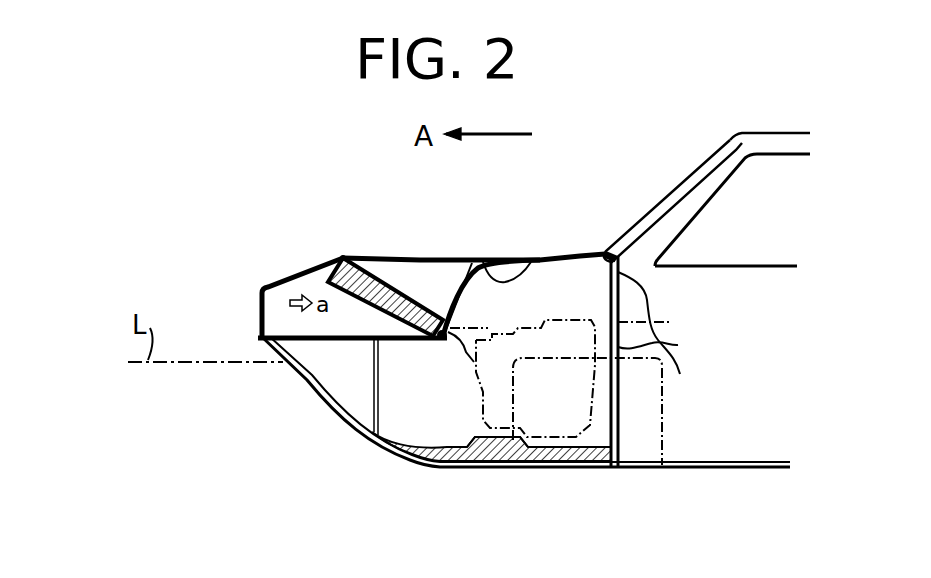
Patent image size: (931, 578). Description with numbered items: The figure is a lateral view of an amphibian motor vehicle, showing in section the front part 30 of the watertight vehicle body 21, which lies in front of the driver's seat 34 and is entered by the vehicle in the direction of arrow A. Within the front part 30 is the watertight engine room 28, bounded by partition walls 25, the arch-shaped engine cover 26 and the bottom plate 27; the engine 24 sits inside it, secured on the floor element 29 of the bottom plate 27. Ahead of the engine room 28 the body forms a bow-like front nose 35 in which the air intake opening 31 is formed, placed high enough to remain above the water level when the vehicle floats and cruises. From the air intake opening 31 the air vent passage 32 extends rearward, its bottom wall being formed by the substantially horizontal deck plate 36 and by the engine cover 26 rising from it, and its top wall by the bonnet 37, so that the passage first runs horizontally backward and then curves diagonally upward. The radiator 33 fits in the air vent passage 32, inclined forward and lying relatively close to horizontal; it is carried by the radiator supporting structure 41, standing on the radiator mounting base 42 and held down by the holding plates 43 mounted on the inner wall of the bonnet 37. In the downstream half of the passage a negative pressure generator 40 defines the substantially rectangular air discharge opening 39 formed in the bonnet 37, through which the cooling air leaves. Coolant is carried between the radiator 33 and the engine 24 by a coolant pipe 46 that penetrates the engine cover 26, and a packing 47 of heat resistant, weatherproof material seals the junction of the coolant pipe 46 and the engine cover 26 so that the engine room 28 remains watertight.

The vehicle body 21 is at (579, 486).
The engine 24 is at (677, 317).
The partition walls 25 is at (665, 345).
The engine cover 26 is at (537, 263).
The bottom plate 27 is at (451, 470).
The engine room 28 is at (548, 281).
The floor element 29 is at (415, 432).
The front part 30 is at (366, 190).
The air intake opening 31 is at (258, 313).
The air vent passage 32 is at (262, 290).
The radiator 33 is at (367, 268).
The driver's seat 34 is at (655, 162).
The front nose 35 is at (249, 350).
The deck plate 36 is at (303, 383).
The bonnet 37 is at (293, 276).
The air discharge opening 39 is at (423, 258).
The negative pressure generator 40 is at (343, 257).
The radiator supporting structure 41 is at (451, 247).
The radiator mounting base 42 is at (363, 340).
The holding plates 43 is at (433, 281).
The coolant pipe 46 is at (556, 381).
The packing 47 is at (438, 345).